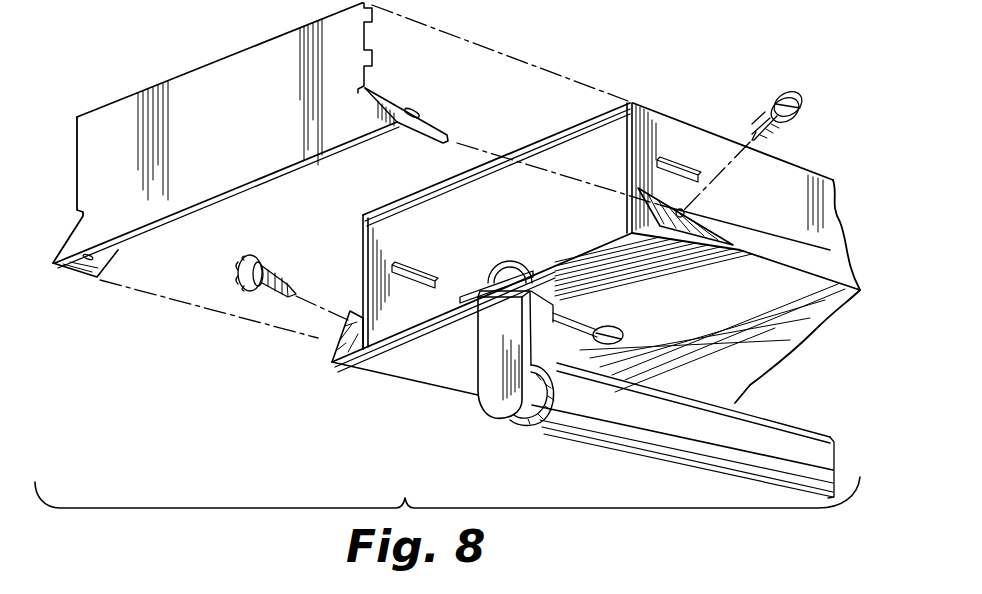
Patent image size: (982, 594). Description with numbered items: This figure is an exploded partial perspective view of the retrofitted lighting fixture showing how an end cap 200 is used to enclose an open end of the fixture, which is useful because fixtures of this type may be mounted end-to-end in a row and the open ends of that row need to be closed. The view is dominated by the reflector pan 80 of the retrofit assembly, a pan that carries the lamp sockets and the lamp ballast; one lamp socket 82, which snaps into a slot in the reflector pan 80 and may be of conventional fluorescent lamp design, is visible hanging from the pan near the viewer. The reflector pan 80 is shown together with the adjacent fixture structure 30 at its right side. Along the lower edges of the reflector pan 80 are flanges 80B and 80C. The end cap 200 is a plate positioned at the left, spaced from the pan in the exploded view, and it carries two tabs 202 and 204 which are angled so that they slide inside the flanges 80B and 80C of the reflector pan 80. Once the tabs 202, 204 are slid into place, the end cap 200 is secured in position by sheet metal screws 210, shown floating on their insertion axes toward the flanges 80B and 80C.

The end cap 200 is at (219, 68).
The tab 202 is at (423, 135).
The tab 204 is at (80, 267).
The sheet metal screw 210 is at (264, 256).
The side panel 30 is at (698, 129).
The reflector pan 80 is at (438, 378).
The flange 80B is at (748, 227).
The flange 80C is at (342, 329).
The lamp socket 82 is at (494, 420).